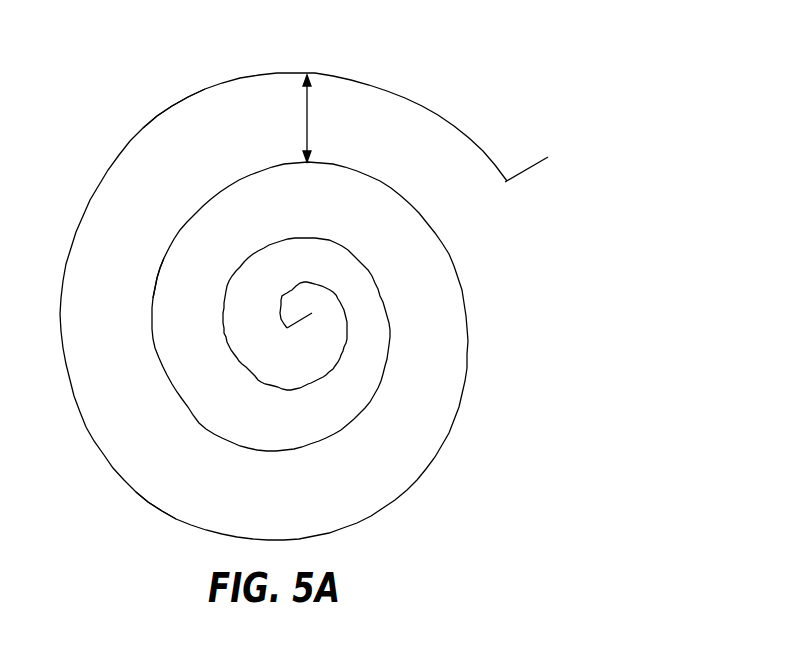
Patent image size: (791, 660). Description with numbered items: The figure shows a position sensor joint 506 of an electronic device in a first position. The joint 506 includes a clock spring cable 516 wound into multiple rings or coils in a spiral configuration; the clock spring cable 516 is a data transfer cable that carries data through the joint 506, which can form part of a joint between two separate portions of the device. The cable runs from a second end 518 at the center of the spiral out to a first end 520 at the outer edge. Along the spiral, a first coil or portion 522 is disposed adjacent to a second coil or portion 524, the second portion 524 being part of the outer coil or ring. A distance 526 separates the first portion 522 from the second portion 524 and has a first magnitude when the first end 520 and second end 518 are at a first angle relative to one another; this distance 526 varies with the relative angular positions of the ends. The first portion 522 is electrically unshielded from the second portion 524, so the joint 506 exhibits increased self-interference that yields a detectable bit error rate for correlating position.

The position sensor joint 506 is at (527, 380).
The clock spring cable 516 is at (157, 508).
The second end 518 is at (300, 326).
The first end 520 is at (530, 170).
The first portion 522 is at (158, 277).
The second portion 524 is at (177, 112).
The distance 526 is at (310, 120).